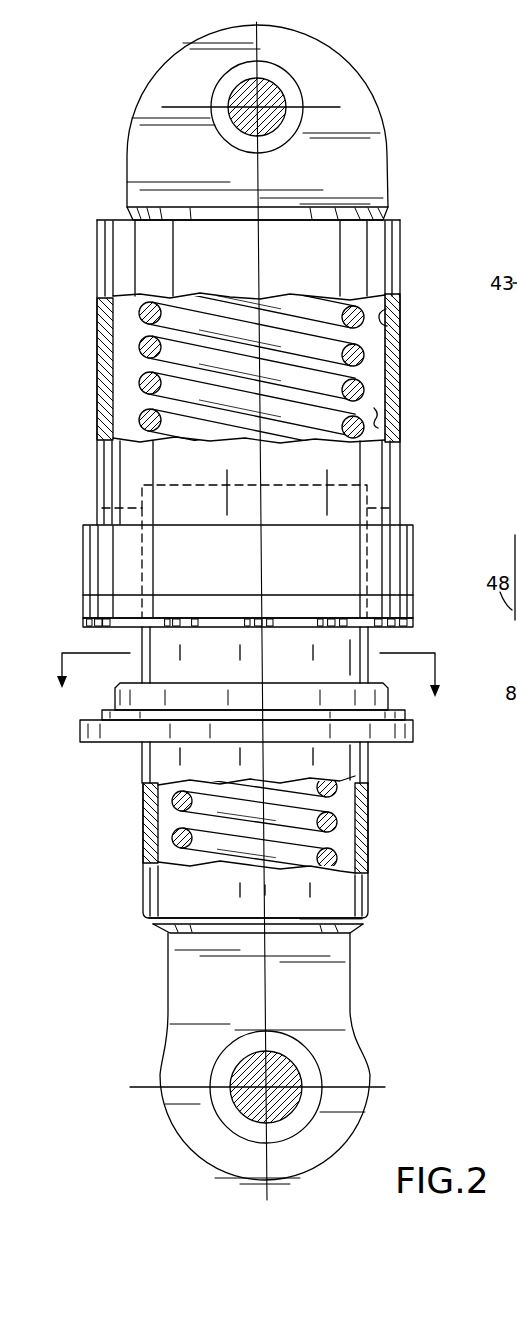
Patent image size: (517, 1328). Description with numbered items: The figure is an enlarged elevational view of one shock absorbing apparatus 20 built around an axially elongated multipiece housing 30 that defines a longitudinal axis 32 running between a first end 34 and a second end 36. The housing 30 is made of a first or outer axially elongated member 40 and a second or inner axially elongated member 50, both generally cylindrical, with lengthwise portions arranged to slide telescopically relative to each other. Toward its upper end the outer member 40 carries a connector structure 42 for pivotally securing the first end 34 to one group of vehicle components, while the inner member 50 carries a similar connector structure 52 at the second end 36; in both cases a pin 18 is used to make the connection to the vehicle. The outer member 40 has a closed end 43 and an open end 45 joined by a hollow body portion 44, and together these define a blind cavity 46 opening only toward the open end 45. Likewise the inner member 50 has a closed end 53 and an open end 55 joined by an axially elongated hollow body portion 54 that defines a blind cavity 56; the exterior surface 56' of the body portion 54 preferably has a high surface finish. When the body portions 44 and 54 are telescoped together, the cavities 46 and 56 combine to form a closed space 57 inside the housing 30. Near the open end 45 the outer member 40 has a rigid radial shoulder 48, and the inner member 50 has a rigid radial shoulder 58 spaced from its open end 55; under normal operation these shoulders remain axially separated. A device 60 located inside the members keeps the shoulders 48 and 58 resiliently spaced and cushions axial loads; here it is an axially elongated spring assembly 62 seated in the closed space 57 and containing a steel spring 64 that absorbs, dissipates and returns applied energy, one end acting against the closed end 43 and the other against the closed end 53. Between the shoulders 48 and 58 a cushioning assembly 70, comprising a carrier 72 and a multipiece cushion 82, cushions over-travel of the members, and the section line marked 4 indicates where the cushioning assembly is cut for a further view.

The pin 18 is at (270, 100).
The connector structure 42 is at (404, 100).
The longitudinal axis 32 is at (262, 195).
The closed end 43 is at (112, 232).
The multipiece housing 30 is at (83, 250).
The shock absorbing apparatus 20 is at (415, 206).
The first end 34 is at (390, 256).
The blind cavity 46 is at (392, 310).
The first outer axially elongated member 40 is at (392, 357).
The spring assembly 62 is at (382, 391).
The closed space 57 is at (392, 425).
The device 60 is at (124, 368).
The steel spring 64 is at (140, 418).
The open end 55 is at (97, 510).
The hollow body portion 44 is at (395, 499).
The open end 45 is at (402, 567).
The radial shoulder 48 is at (90, 607).
The section line 4- 4 is at (243, 661).
The multipiece cushion 82 is at (96, 699).
The cushioning assembly 70 is at (388, 700).
The carrier 72 is at (403, 716).
The radial shoulder 58 is at (119, 742).
The exterior surface 56' is at (281, 713).
The blind cavity 56 is at (135, 823).
The second inner axially elongated member 50 is at (363, 852).
The hollow body portion 54 is at (155, 895).
The closed end 53 is at (150, 925).
The second end 36 is at (363, 920).
The connector structure 52 is at (347, 1142).